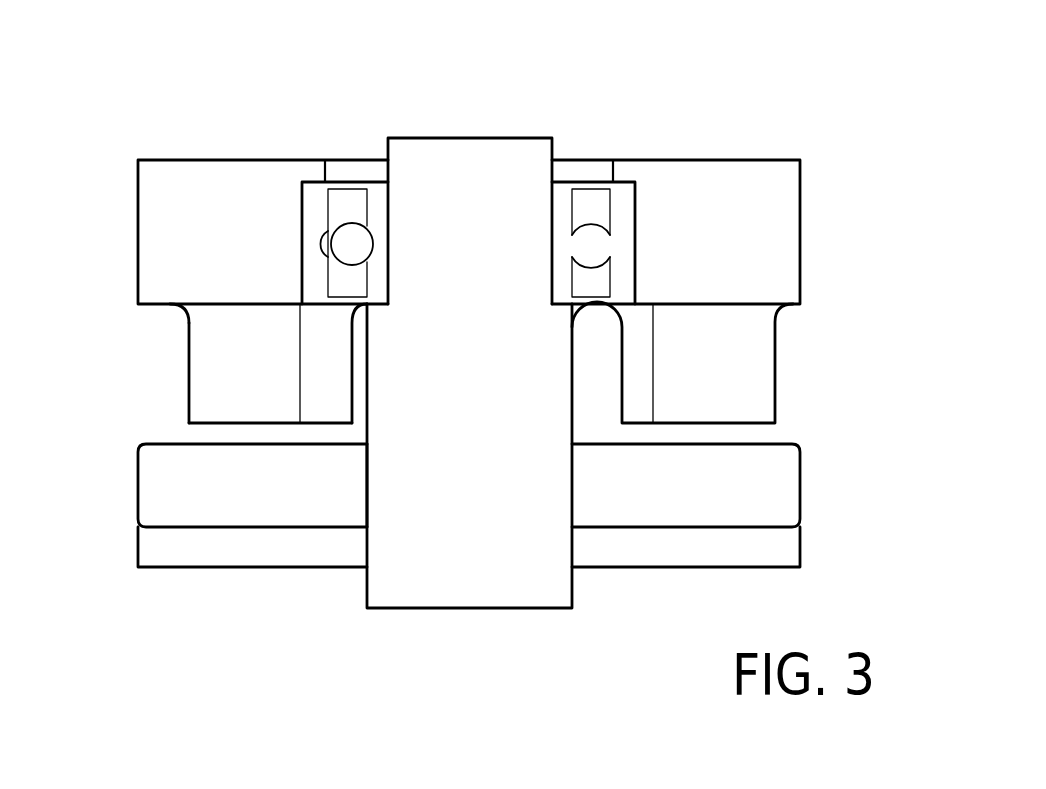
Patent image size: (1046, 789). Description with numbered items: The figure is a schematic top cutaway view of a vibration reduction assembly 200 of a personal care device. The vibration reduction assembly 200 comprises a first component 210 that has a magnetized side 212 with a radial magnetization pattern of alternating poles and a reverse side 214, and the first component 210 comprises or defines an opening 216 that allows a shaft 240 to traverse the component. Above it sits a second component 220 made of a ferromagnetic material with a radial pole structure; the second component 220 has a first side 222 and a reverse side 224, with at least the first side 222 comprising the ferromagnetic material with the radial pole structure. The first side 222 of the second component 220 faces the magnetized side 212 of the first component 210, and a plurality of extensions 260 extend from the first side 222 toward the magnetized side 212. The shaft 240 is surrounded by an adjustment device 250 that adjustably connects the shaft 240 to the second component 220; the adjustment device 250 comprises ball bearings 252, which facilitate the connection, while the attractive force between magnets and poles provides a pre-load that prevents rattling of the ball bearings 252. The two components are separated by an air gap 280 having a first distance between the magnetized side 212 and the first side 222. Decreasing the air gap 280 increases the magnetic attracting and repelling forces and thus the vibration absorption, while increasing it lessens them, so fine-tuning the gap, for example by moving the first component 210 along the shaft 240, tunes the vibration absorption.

The vibration reduction assembly 200 is at (139, 129).
The first component 210 is at (782, 472).
The magnetized side 212 is at (262, 444).
The reverse side 214 is at (663, 567).
The opening 216 is at (363, 490).
The second component 220 is at (744, 160).
The first side 222 is at (217, 305).
The reverse side 224 is at (200, 160).
The shaft 240 is at (472, 160).
The adjustment device 250 is at (562, 197).
The ball bearings 252 is at (348, 233).
The extensions 260 is at (203, 375).
The air gap 280 is at (203, 434).